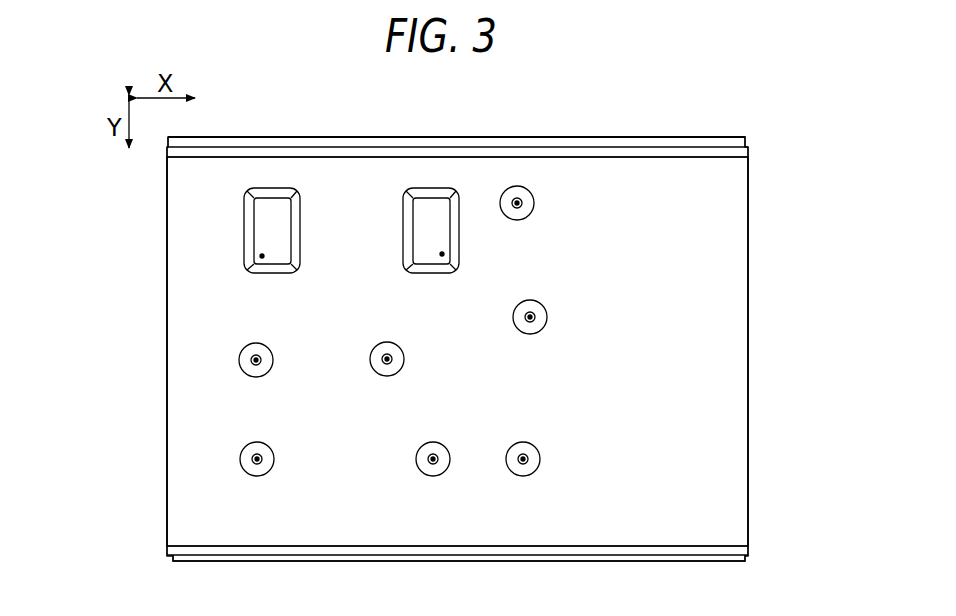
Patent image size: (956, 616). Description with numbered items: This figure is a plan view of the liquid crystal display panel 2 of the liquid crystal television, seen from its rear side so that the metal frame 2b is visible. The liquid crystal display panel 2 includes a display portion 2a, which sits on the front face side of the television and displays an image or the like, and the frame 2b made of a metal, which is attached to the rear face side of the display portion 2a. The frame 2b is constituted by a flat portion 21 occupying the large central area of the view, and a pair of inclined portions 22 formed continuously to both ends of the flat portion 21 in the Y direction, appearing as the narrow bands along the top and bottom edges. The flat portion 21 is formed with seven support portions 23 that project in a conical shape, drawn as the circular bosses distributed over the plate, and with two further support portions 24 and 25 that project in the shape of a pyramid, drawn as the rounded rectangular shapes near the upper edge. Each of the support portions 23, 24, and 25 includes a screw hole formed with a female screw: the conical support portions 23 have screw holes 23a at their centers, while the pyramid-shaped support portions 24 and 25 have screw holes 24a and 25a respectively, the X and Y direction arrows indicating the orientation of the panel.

The liquid crystal display panel 2 is at (741, 118).
The display portion 2a is at (649, 135).
The frame 2b is at (721, 238).
The flat portion 21 is at (733, 313).
The inclined portions 22 is at (742, 148).
The support portions 23 is at (533, 203).
The screw holes 23a is at (517, 199).
The support portion 24 is at (282, 231).
The screw hole 24a is at (262, 254).
The support portion 25 is at (421, 229).
The screw hole 25a is at (442, 252).